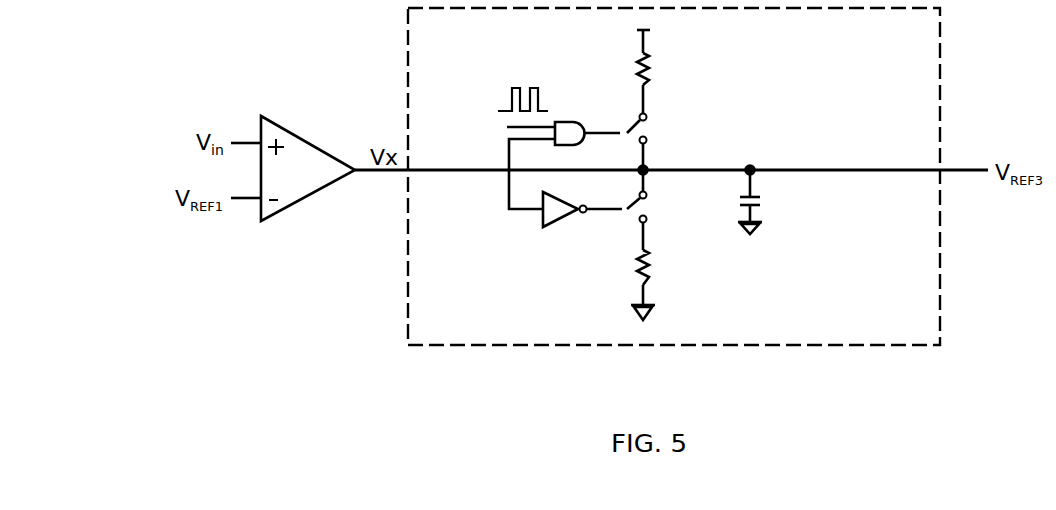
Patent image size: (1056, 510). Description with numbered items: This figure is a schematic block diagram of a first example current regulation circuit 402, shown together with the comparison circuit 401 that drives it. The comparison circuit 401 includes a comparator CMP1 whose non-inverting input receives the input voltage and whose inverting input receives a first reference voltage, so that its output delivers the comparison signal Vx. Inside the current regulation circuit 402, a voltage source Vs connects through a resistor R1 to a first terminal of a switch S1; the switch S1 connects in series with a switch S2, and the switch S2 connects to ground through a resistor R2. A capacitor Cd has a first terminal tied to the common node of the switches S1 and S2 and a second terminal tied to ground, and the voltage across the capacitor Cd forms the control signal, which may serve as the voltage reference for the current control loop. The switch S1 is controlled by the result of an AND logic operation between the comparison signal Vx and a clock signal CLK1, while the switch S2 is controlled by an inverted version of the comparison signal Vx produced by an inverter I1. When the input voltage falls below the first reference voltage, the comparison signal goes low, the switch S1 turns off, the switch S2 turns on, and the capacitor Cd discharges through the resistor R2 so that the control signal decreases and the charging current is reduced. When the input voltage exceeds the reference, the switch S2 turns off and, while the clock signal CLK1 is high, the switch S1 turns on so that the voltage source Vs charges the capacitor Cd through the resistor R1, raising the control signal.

The comparison circuit 401 is at (293, 163).
The current regulation circuit 402 is at (674, 176).
The comparator CMP1 is at (330, 173).
The clock signal CLK1 is at (501, 114).
The inverter I1 is at (556, 200).
The resistor R1 is at (660, 69).
The switch S1 is at (655, 129).
The switch S2 is at (655, 210).
The resistor R2 is at (660, 267).
The capacitor Cd is at (767, 207).